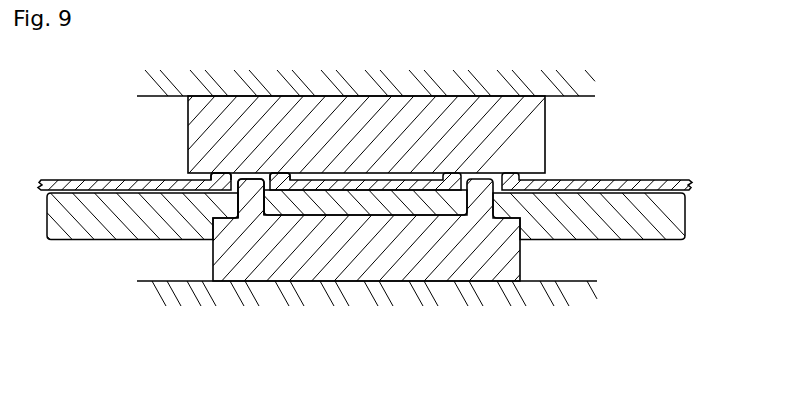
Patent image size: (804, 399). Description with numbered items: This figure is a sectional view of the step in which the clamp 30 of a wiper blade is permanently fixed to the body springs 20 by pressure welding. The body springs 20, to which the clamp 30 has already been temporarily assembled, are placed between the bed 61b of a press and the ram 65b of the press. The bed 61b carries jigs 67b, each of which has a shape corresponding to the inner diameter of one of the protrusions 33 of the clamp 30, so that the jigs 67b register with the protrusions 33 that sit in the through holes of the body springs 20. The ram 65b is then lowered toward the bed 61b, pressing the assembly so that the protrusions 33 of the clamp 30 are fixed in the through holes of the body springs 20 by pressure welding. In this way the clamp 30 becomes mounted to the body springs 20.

The body springs 20 is at (666, 172).
The clamp 30 is at (697, 231).
The protrusions 33 is at (251, 176).
The bed of the press 61b is at (535, 256).
The ram of the press 65b is at (558, 124).
The jigs 67b is at (252, 182).